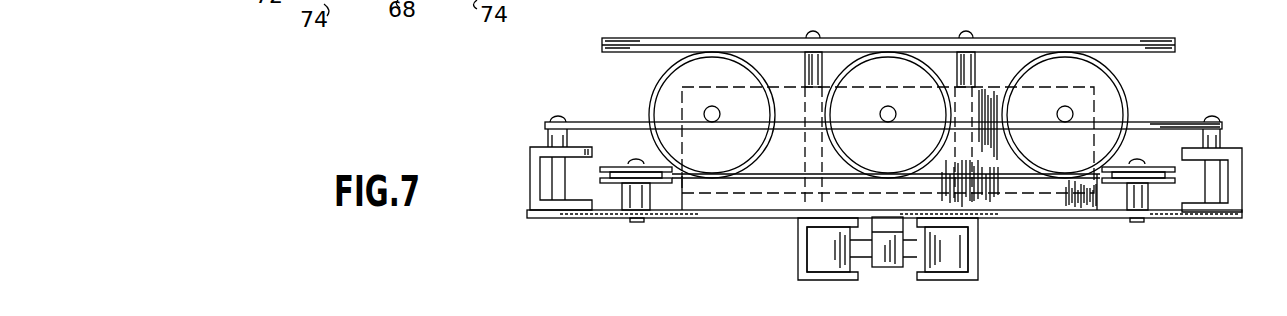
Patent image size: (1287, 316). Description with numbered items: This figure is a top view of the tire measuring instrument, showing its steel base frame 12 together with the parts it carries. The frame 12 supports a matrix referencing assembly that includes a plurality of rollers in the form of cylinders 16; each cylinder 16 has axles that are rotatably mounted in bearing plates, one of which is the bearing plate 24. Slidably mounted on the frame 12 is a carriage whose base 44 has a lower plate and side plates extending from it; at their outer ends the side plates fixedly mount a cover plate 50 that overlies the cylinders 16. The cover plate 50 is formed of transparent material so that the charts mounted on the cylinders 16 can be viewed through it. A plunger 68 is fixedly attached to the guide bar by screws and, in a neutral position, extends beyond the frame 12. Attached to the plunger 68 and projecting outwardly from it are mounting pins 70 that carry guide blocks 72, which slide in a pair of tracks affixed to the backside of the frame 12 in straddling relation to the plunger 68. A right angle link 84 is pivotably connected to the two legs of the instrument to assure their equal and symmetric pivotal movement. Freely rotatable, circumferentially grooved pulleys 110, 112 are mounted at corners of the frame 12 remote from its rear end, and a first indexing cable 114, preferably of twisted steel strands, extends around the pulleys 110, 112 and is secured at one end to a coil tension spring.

The base frame 12 is at (697, 215).
The cylinder 16 is at (652, 94).
The bearing plate 24 is at (988, 88).
The base 44 is at (800, 185).
The cover plate 50 is at (912, 38).
The plunger 68 is at (878, 268).
The mounting pin 70 is at (912, 253).
The guide block 72 is at (815, 253).
The right angle link 84 is at (1182, 125).
The pulley 110 is at (1126, 187).
The pulley 112 is at (635, 185).
The first indexing cable 114 is at (1024, 180).